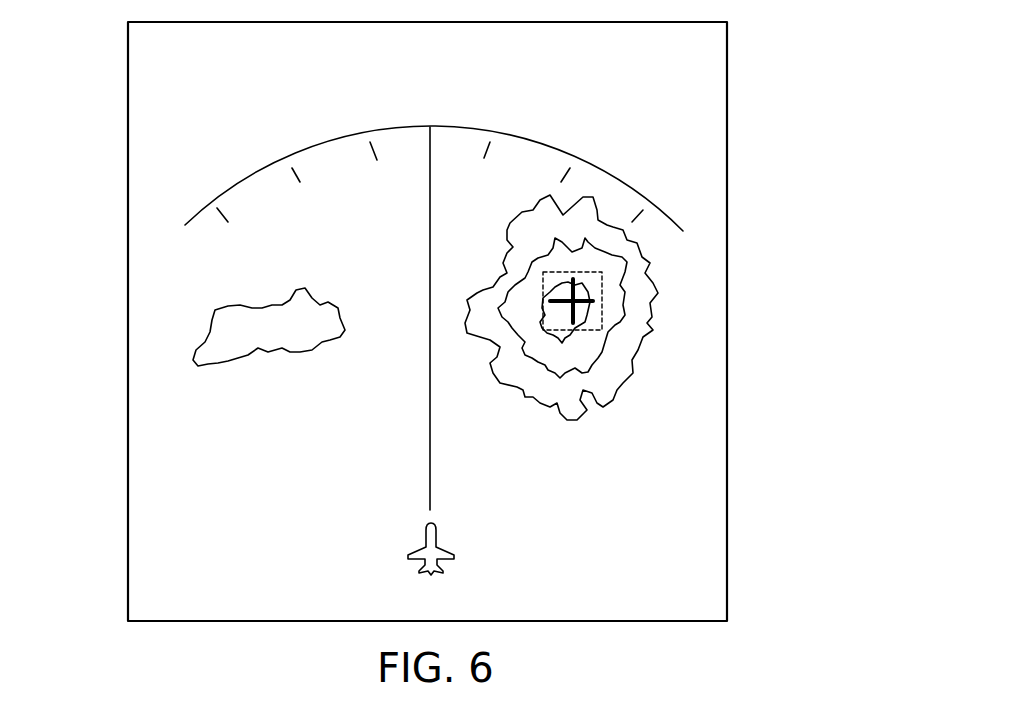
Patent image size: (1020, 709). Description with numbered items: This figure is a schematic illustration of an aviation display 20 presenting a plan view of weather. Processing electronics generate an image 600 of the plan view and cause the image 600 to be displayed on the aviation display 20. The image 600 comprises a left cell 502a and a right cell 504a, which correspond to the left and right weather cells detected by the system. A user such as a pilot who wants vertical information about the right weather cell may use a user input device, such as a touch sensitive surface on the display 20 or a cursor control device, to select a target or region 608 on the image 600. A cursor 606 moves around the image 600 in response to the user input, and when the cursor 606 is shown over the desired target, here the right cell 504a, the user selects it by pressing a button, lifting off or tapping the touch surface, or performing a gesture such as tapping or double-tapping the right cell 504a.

The aviation display 20 is at (151, 106).
The image 600 is at (247, 248).
The left cell 502a is at (218, 327).
The right cell 504a is at (658, 297).
The cursor 606 is at (588, 290).
The target or region 608 is at (557, 278).